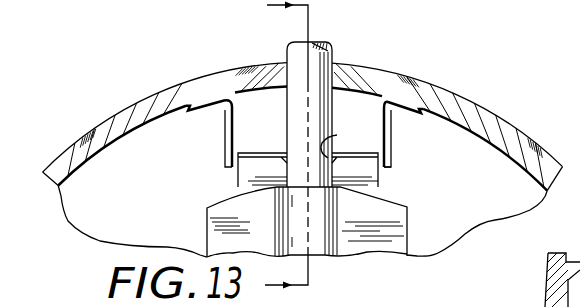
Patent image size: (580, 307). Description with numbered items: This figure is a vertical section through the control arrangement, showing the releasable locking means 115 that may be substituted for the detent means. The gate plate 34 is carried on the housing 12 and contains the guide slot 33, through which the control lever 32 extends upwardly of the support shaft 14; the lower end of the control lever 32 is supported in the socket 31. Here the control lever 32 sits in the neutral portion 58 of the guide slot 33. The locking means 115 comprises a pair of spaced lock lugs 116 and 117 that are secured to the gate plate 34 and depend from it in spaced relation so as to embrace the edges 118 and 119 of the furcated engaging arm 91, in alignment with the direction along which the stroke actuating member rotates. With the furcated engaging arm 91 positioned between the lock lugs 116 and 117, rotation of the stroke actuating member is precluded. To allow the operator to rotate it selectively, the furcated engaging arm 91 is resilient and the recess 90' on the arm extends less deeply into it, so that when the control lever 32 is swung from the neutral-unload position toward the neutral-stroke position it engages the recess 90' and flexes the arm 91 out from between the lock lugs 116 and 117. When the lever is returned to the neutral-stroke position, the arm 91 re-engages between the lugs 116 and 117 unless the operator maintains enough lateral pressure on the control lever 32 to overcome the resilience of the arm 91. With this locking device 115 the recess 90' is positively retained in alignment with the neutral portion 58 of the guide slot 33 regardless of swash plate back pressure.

The housing 12 is at (105, 127).
The support shaft 14 is at (302, 150).
The socket 31 is at (297, 213).
The control lever 32 is at (331, 50).
The guide slot 33 is at (216, 74).
The gate plate 34 is at (492, 128).
The neutral portion 58 is at (333, 73).
The recess 90' is at (346, 141).
The furcated engaging arm 91 is at (365, 192).
The releasable locking means 115 is at (401, 151).
The lock lug 116 is at (224, 136).
The lock lug 117 is at (392, 133).
The edge 118 is at (232, 183).
The edge 119 is at (380, 181).